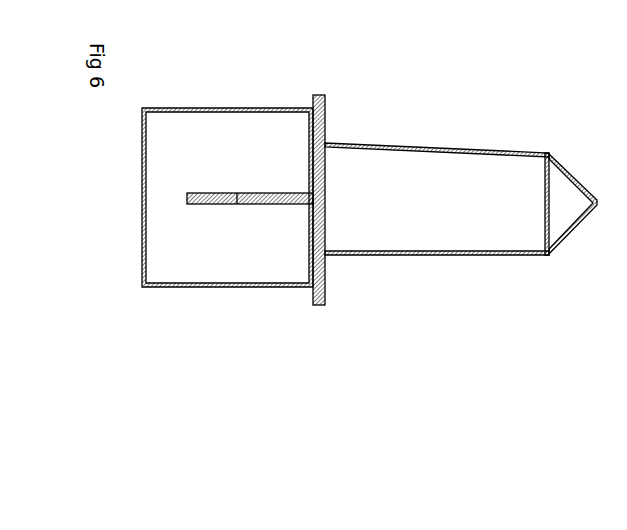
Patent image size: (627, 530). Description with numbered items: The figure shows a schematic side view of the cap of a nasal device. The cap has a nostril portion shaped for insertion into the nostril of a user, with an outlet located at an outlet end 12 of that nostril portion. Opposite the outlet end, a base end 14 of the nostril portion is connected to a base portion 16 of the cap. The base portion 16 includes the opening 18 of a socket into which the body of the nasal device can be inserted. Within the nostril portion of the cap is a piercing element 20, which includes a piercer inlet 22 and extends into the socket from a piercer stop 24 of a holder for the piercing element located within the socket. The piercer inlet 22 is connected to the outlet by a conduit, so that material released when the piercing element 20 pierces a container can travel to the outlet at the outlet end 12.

The outlet end 12 is at (128, 233).
The base end 14 is at (472, 312).
The base portion 16 is at (224, 264).
The opening 18 is at (258, 192).
The piercing element 20 is at (412, 232).
The piercer inlet 22 is at (326, 216).
The piercer stop 24 is at (599, 210).